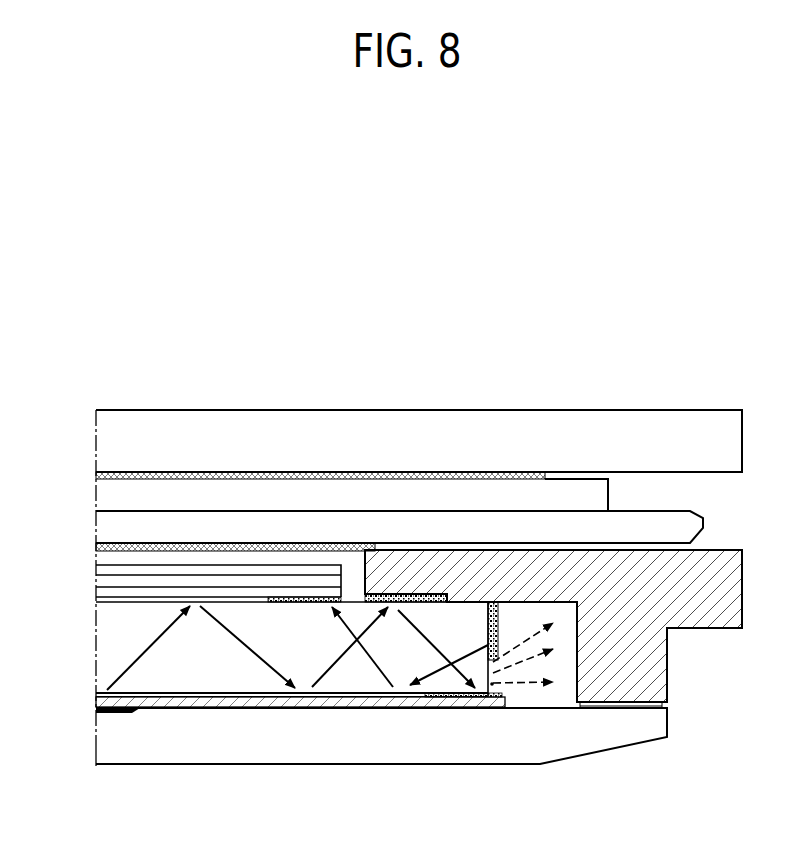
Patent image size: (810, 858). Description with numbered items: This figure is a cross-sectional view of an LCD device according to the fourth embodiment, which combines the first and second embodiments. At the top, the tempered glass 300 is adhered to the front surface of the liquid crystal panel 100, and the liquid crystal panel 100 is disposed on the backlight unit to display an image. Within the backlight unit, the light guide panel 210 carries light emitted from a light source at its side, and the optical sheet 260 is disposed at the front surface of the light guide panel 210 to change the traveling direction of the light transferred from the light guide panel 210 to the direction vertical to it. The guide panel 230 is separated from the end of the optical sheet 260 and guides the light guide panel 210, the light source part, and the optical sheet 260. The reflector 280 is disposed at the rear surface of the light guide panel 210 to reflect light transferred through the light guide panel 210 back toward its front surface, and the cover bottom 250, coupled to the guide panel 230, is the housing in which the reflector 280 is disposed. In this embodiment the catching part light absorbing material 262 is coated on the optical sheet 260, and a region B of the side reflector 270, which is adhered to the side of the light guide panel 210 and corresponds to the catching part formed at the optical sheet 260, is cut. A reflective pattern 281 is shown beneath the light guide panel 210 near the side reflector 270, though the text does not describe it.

The tempered glass 300 is at (90, 411).
The liquid crystal panel 100 is at (90, 473).
The optical sheet 260 is at (90, 552).
The catching part light absorbing material 262 is at (305, 603).
The light guide panel 210 is at (90, 603).
The reflective pattern 281 is at (444, 699).
The reflector 280 is at (108, 699).
The cover bottom 250 is at (173, 745).
The side reflector 270 is at (498, 623).
The region of the side reflector B is at (492, 684).
The guide panel 230 is at (635, 668).